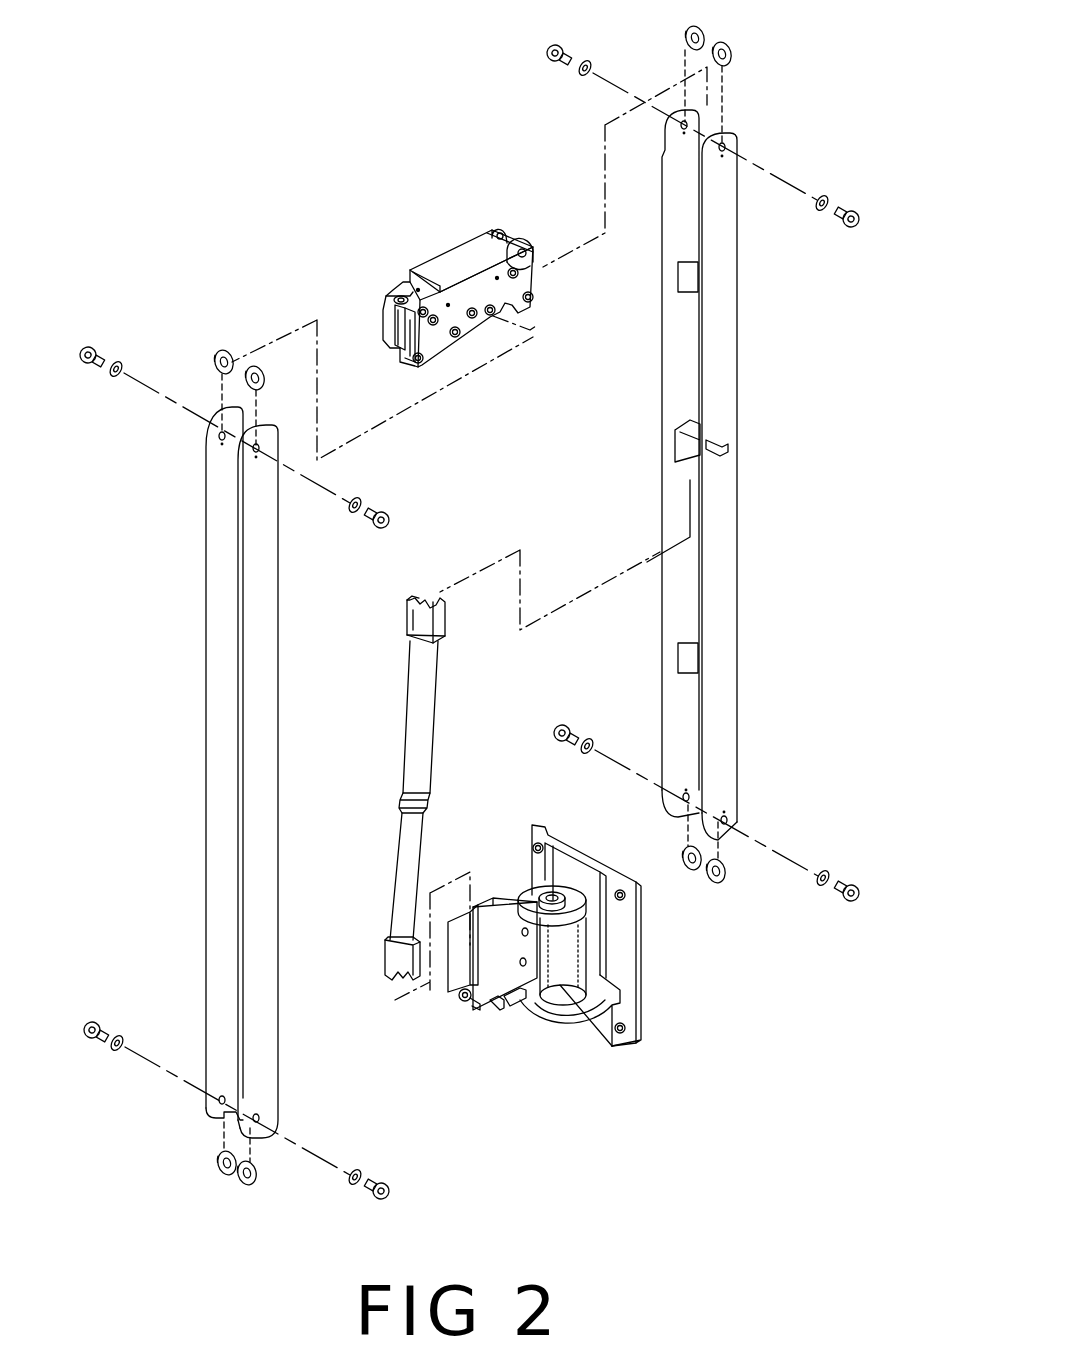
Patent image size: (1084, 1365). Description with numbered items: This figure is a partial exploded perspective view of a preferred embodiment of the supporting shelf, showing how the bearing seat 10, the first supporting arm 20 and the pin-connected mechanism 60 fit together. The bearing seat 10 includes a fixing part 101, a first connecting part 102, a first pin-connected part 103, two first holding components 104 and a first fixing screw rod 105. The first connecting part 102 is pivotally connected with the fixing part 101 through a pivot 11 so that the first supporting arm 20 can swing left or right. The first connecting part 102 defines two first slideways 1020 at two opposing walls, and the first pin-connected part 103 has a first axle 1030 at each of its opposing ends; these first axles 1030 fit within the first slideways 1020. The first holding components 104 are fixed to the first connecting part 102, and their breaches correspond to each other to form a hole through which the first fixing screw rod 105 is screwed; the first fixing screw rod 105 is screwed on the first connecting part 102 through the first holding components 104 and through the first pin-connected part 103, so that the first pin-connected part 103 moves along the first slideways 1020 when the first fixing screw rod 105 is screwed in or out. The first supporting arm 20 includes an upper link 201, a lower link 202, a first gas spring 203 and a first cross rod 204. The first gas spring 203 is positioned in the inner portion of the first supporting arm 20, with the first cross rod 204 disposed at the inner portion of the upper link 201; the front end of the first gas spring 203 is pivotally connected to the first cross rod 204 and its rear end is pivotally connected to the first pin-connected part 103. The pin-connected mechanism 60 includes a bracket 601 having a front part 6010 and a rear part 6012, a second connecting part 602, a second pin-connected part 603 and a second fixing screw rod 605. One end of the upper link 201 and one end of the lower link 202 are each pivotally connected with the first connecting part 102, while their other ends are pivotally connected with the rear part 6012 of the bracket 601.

The bearing seat 10 is at (700, 984).
The fixing part 101 is at (624, 1002).
The first connecting part 102 is at (560, 978).
The first slideways 1020 is at (510, 1002).
The first axle 1030 is at (500, 1008).
The first pin-connected part 103 is at (462, 982).
The first holding components 104 is at (490, 1015).
The first fixing screw rod 105 is at (470, 998).
The pivot shaft 11 is at (552, 896).
The first supporting arm 20 is at (790, 590).
The upper link 201 is at (718, 524).
The lower link 202 is at (247, 798).
The first gas spring 203 is at (415, 726).
The first cross rod 204 is at (740, 440).
The pin-connected mechanism 60 is at (470, 142).
The bracket 601 is at (437, 263).
The front part 6010 is at (407, 325).
The rear part 6012 is at (523, 262).
The second connecting part 602 is at (400, 333).
The second pin-connected part 603 is at (402, 350).
The second fixing screw rod 605 is at (396, 286).